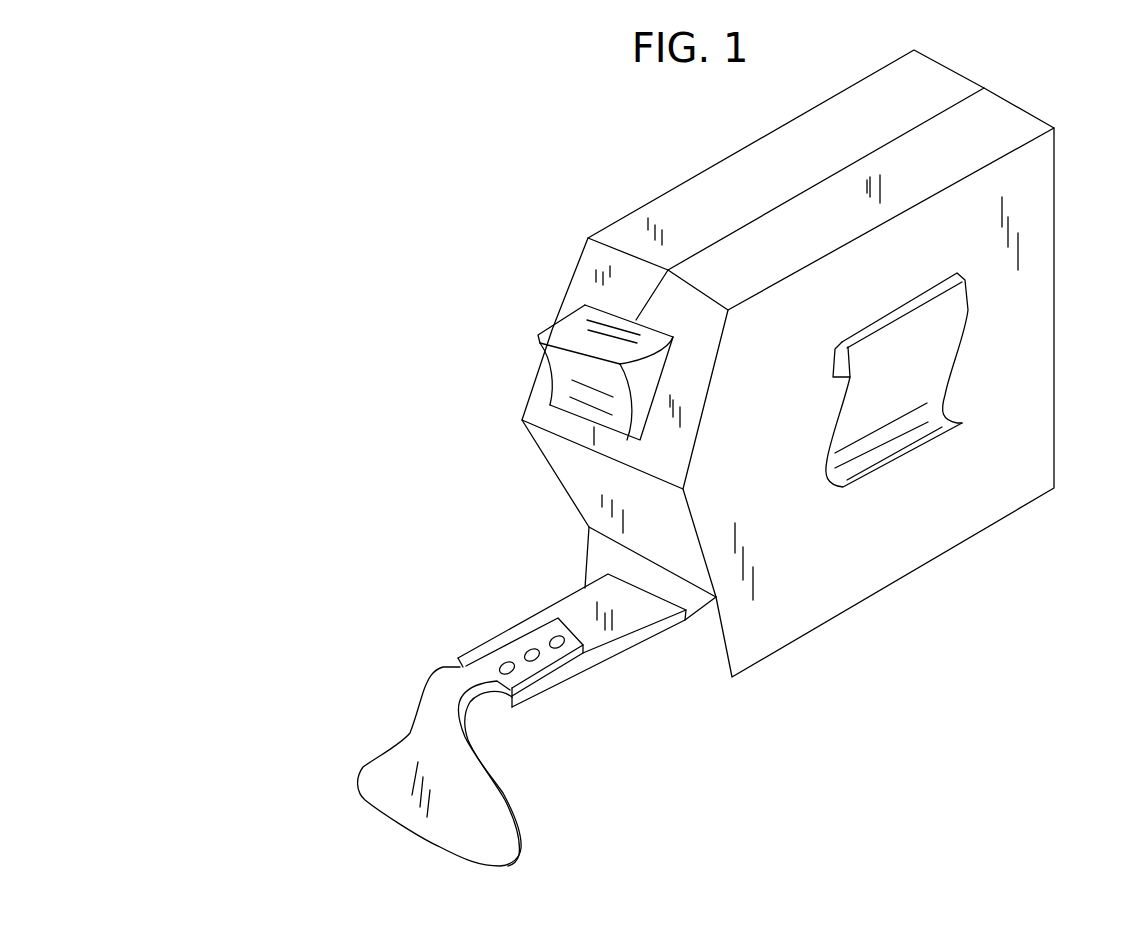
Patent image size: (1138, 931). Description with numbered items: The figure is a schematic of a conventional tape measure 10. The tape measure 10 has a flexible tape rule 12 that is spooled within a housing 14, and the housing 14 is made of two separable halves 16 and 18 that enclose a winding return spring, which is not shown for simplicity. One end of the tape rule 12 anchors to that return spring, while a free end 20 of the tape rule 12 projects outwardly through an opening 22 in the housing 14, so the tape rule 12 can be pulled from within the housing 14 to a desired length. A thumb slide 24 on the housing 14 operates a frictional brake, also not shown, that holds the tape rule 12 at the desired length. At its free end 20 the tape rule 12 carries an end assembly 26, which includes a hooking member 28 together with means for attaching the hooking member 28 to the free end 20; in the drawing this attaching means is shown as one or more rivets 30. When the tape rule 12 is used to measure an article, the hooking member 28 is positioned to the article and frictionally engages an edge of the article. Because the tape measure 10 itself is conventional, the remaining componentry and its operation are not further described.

The tape measure 10 is at (310, 252).
The tape rule 12 is at (613, 660).
The housing 14 is at (1058, 437).
The housing half 16 is at (944, 64).
The housing half 18 is at (1040, 126).
The free end 20 is at (535, 708).
The opening 22 is at (650, 638).
The thumb slide 24 is at (548, 330).
The end assembly 26 is at (310, 736).
The hooking member 28 is at (400, 823).
The rivets 30 is at (543, 623).